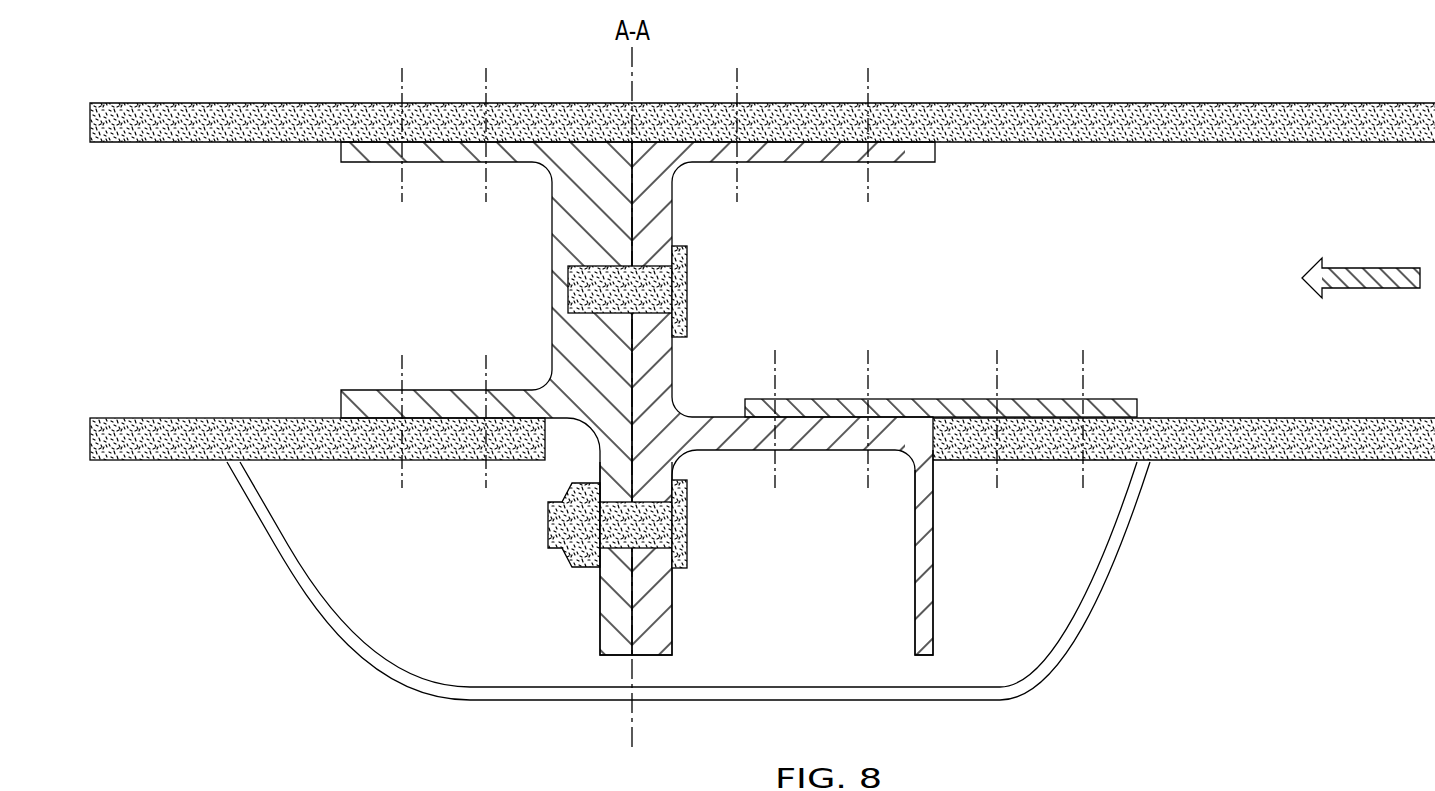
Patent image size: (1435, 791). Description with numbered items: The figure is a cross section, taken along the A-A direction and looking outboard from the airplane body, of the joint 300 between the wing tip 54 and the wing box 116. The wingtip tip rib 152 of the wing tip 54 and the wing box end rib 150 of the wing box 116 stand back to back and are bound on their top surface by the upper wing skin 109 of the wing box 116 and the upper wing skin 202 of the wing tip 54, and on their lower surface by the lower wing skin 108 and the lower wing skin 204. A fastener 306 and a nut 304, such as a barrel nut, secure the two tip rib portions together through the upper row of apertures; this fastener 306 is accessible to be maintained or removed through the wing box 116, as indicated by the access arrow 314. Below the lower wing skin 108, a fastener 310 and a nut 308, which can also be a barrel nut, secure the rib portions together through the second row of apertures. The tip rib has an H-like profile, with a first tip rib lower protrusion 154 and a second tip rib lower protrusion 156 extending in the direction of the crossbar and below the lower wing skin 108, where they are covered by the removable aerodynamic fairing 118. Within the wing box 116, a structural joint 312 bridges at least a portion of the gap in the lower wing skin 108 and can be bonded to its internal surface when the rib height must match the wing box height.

The wing tip to wing box joint assembly 300 is at (155, 78).
The upper wing skin of wing tip 202 is at (243, 118).
The upper wing skin 109 is at (1197, 117).
The wing tip 54 is at (255, 281).
The wingtip tip rib 152 is at (381, 175).
The nut 304 is at (535, 298).
The fastener 306 is at (802, 298).
The wing box end rib 150 is at (947, 181).
The wing box 116 is at (1218, 293).
The access arrow 314 is at (1381, 323).
The lower wing skin of wing tip 204 is at (180, 445).
The lower wing skin 108 is at (1310, 435).
The nut 308 is at (533, 534).
The fastener 310 is at (802, 536).
The first tip rib lower protrusion 154 is at (698, 618).
The second tip rib lower protrusion 156 is at (900, 596).
The aerodynamic fairing 118 is at (1055, 614).
The structural joint 312 is at (1058, 434).